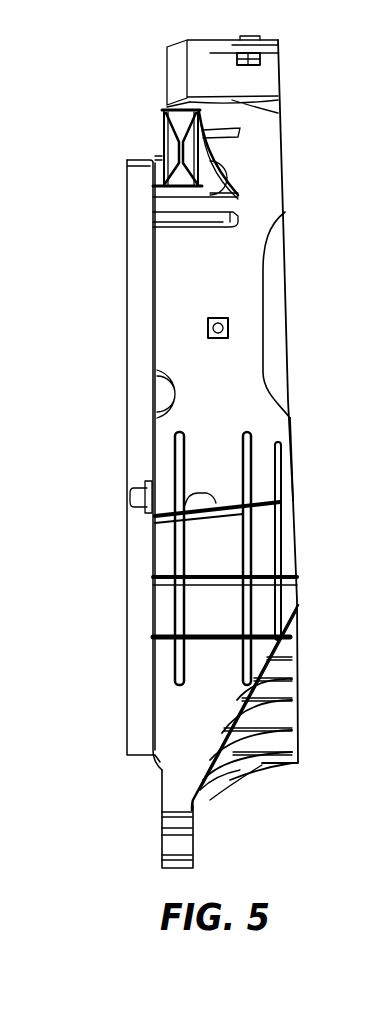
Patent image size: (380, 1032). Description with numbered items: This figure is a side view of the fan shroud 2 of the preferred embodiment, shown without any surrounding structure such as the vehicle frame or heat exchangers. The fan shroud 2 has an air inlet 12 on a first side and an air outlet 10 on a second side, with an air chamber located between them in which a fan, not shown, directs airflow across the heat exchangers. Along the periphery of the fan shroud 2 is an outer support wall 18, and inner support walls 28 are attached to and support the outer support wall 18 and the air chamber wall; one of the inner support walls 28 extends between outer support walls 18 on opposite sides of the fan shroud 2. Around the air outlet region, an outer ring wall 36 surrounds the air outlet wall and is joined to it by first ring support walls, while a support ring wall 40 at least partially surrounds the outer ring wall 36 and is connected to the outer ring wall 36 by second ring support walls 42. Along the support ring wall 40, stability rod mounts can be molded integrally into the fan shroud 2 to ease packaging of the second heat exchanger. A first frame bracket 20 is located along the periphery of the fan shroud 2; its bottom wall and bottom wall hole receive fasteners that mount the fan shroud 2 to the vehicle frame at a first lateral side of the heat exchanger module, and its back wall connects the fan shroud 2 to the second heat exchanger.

The fan shroud 2 is at (320, 103).
The air outlet 10 is at (292, 201).
The air inlet 12 is at (122, 328).
The outer support wall 18 is at (190, 700).
The first frame bracket 20 is at (207, 490).
The inner support walls 28 is at (278, 687).
The outer ring wall 36 is at (268, 415).
The support ring wall 40 is at (198, 260).
The second ring support walls 42 is at (273, 333).